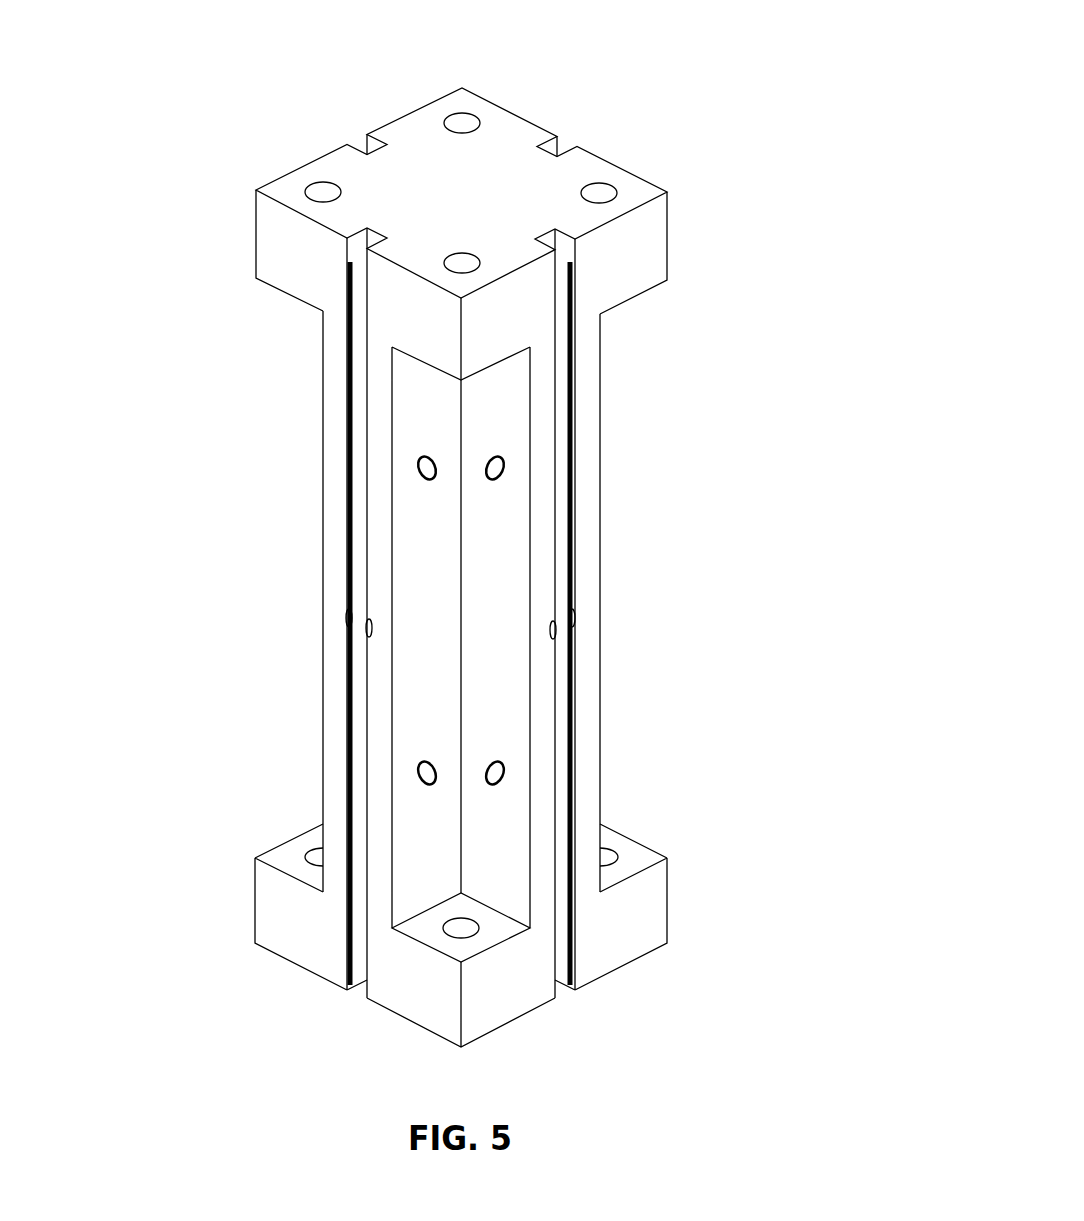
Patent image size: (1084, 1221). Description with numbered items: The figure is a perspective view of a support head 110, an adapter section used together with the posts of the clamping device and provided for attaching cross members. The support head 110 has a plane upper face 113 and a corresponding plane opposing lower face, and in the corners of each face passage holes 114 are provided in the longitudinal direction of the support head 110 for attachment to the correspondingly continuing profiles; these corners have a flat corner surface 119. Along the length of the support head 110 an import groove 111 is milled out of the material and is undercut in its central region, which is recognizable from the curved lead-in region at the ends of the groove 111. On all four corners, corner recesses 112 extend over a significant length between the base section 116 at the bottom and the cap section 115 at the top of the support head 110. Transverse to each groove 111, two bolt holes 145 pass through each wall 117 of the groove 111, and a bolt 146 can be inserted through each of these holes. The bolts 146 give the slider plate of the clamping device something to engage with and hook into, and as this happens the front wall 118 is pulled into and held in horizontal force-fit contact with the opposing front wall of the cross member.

The support head 110 is at (672, 611).
The import groove 111 is at (563, 253).
The corner recesses 112 is at (268, 363).
The upper face 113 is at (497, 165).
The passage holes 114 is at (599, 192).
The cap section 115 is at (283, 230).
The base section 116 is at (647, 926).
The wall 117 is at (415, 540).
The front wall 118 is at (335, 703).
The flat corner surface 119 is at (290, 853).
The bolt holes 145 is at (500, 458).
The bolt 146 is at (497, 473).